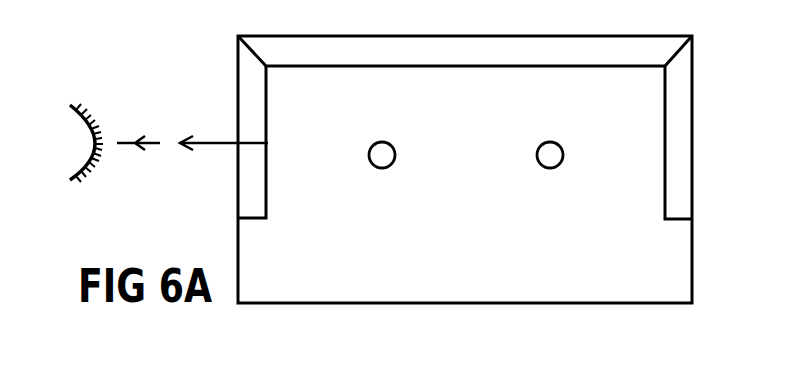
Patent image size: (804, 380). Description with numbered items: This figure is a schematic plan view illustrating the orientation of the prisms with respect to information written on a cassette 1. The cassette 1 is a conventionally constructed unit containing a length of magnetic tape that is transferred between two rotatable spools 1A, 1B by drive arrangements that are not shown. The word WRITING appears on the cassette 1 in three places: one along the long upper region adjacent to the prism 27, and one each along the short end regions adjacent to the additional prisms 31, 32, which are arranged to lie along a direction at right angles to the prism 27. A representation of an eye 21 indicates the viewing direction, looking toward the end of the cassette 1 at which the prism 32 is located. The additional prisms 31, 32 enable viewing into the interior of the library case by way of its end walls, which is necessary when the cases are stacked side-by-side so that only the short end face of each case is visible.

The cassette 1 is at (448, 177).
The rotatable spool 1A is at (370, 163).
The rotatable spool 1B is at (538, 163).
The eye 21 is at (100, 175).
The prism 27 is at (470, 53).
The additional prism 31 is at (677, 152).
The additional prism 32 is at (250, 112).